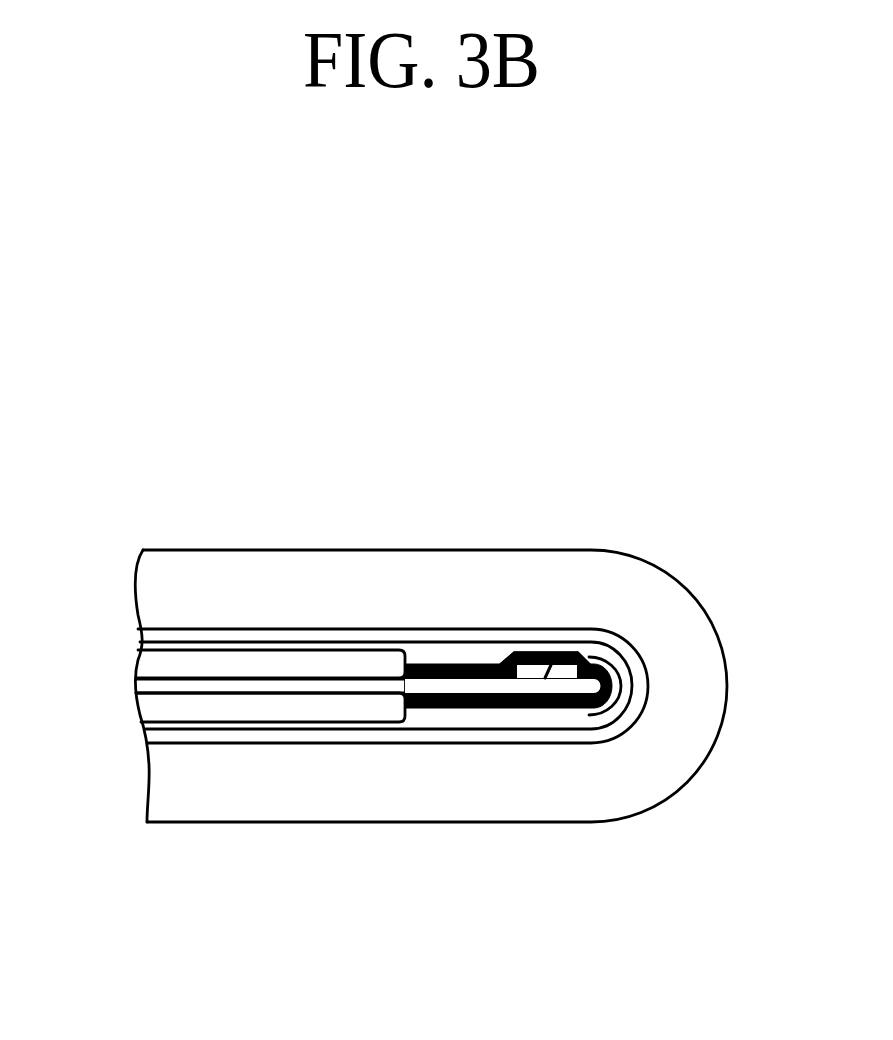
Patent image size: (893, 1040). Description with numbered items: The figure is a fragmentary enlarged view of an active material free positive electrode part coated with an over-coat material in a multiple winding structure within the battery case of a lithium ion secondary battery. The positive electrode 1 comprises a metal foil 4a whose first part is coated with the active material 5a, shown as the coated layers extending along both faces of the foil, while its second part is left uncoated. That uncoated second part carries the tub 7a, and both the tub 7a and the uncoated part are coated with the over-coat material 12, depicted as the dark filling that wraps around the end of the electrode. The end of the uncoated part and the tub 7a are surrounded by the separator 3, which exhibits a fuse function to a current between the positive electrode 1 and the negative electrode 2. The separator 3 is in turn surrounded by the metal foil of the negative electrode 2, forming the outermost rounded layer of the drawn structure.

The positive electrode 1 is at (232, 709).
The negative electrode 2 is at (702, 662).
The separator 3 is at (468, 747).
The metal foil 4a is at (270, 785).
The active material 5a is at (210, 667).
The tub 7a is at (563, 650).
The over-coat material 12 is at (593, 710).